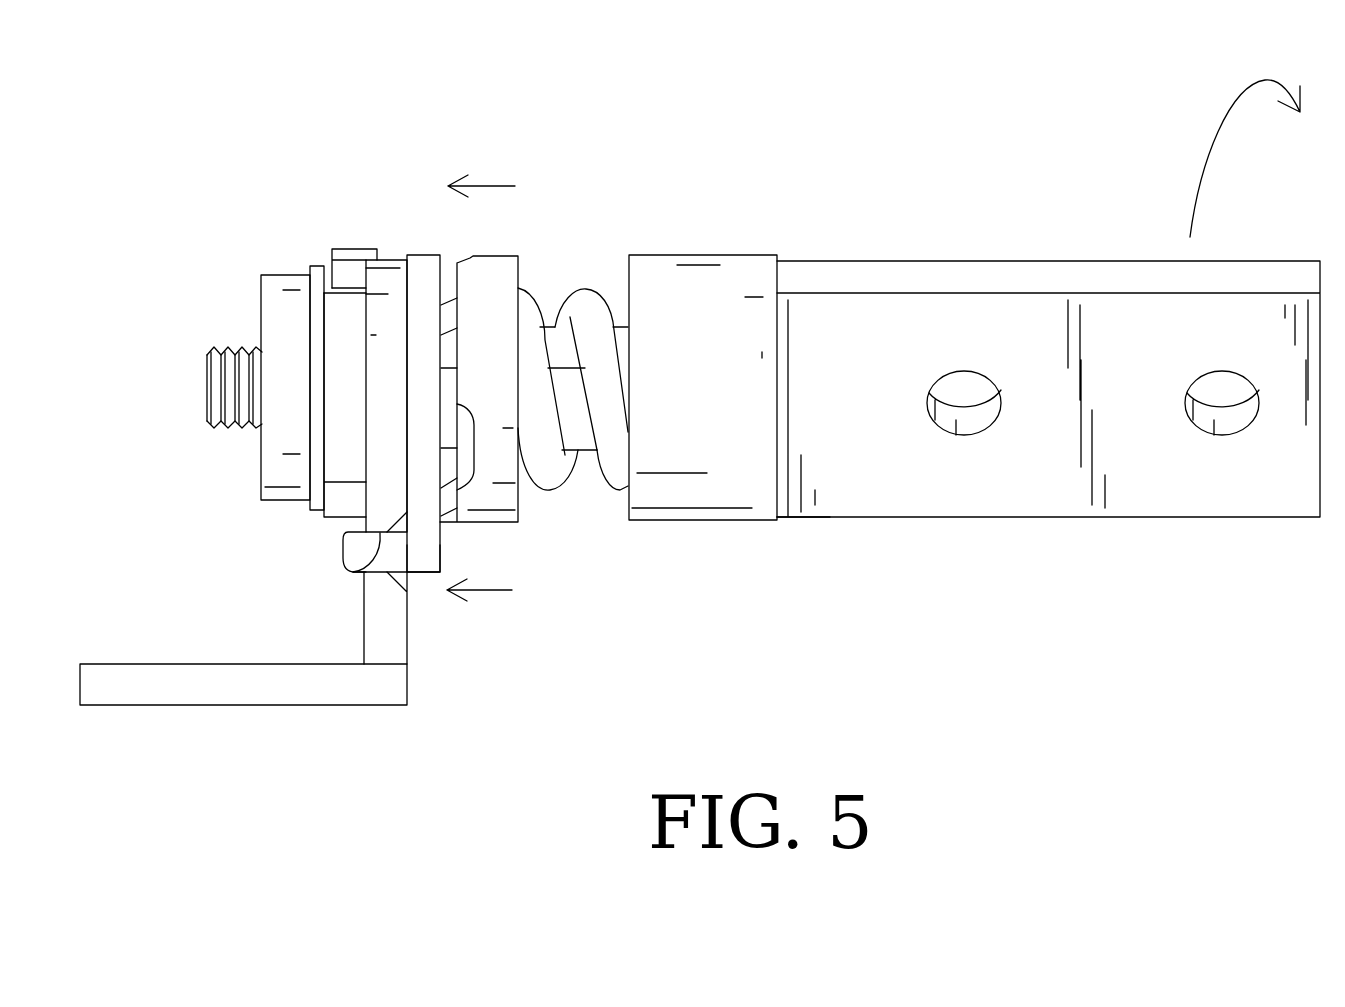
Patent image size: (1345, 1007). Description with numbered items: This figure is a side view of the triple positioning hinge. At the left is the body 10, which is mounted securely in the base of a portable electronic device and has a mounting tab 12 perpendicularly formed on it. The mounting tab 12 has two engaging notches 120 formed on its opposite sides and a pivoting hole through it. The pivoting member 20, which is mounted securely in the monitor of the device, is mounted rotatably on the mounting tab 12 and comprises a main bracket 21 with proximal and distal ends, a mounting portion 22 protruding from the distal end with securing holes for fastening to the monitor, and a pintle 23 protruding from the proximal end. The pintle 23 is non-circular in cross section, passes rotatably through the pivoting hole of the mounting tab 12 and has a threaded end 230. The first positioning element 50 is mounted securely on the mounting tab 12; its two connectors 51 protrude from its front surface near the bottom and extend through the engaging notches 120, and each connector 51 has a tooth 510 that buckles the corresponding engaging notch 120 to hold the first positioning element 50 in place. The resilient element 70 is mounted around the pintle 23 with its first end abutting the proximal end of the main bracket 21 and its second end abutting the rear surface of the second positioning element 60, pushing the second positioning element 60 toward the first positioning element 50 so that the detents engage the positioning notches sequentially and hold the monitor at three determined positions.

The body 10 is at (268, 697).
The mounting tab 12 is at (383, 272).
The pivoting member 20 is at (780, 520).
The main bracket 21 is at (733, 268).
The mounting portion 22 is at (975, 278).
The pintle 23 is at (577, 440).
The first positioning element 50 is at (428, 262).
The connectors 51 is at (415, 562).
The second positioning element 60 is at (498, 267).
The resilient element 70 is at (582, 298).
The engaging notches 120 is at (357, 566).
The threaded end 230 is at (218, 383).
The tooth 510 is at (355, 538).